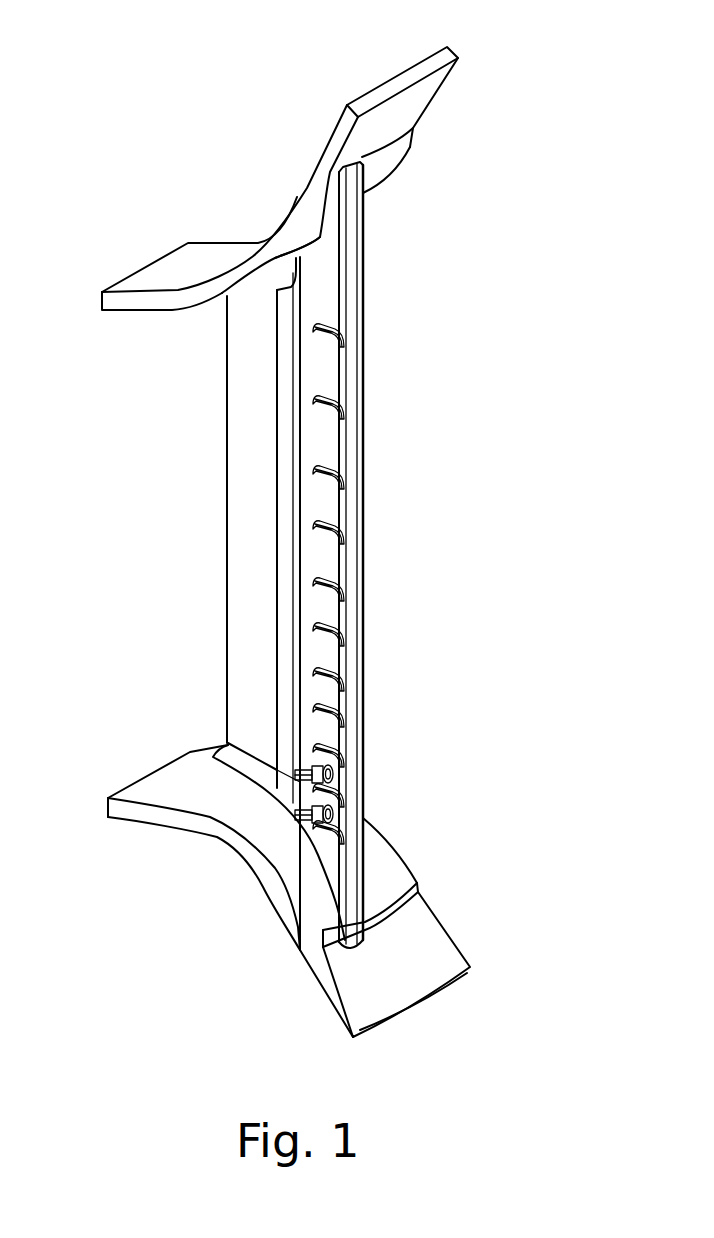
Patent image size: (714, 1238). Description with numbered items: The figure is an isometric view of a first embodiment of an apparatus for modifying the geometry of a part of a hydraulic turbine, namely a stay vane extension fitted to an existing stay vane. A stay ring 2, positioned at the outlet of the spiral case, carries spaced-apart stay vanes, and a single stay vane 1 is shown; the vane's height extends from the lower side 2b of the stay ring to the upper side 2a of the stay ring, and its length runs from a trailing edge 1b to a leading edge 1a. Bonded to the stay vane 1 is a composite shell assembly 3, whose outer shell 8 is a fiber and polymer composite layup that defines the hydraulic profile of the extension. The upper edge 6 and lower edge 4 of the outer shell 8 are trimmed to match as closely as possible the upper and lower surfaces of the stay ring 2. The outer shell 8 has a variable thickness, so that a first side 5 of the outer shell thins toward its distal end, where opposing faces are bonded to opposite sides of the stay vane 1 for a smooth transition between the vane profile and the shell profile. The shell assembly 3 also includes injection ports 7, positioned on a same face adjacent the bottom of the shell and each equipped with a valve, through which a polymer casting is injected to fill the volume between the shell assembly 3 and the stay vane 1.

The stay vane 1 is at (255, 448).
The leading edge of the stay vane 1a is at (255, 567).
The trailing edge of the stay vane 1b is at (223, 507).
The stay ring 2 is at (458, 45).
The upper side of the stay ring 2a is at (330, 144).
The lower side of the stay ring 2b is at (370, 997).
The composite shell assembly 3 is at (353, 454).
The lower edge of the outer shell 4 is at (320, 860).
The first side of the outer shell 5 is at (277, 375).
The upper edge of the outer shell 6 is at (312, 231).
The injection ports 7 is at (303, 789).
The outer shell 8 is at (285, 678).